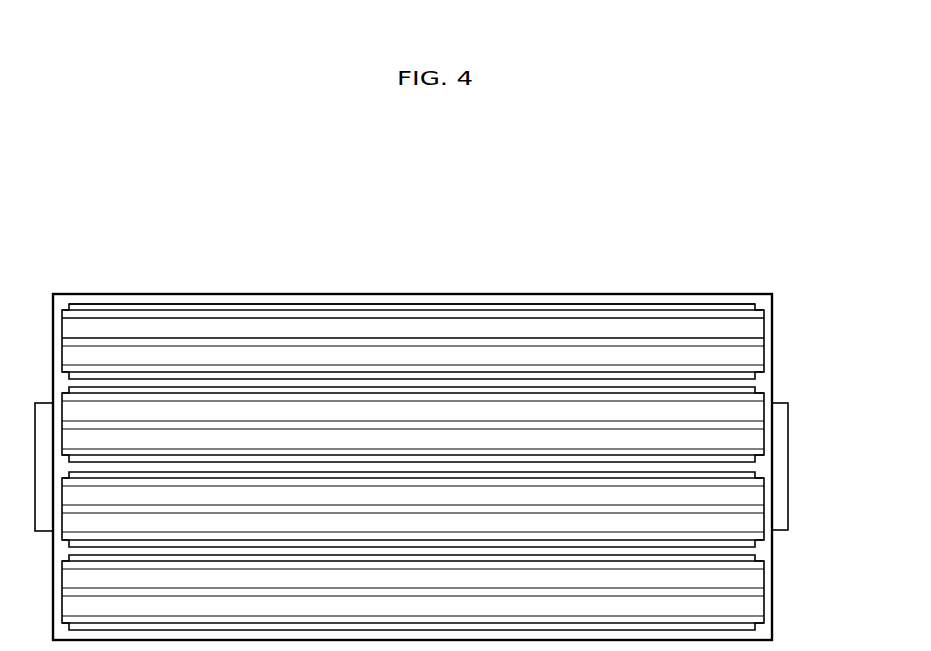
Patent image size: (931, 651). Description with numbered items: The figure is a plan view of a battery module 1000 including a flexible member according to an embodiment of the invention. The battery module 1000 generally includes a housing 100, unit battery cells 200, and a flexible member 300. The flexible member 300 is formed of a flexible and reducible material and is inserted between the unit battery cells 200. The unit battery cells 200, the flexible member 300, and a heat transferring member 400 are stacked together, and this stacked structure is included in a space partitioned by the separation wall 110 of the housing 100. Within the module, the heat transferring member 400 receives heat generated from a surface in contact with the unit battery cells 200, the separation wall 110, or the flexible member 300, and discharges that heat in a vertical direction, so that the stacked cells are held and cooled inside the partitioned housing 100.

The battery module 1000 is at (237, 195).
The housing 100 is at (776, 282).
The separation wall 110 is at (722, 555).
The heat transferring member 400 is at (433, 313).
The unit battery cell 200 is at (502, 325).
The flexible member 300 is at (568, 342).